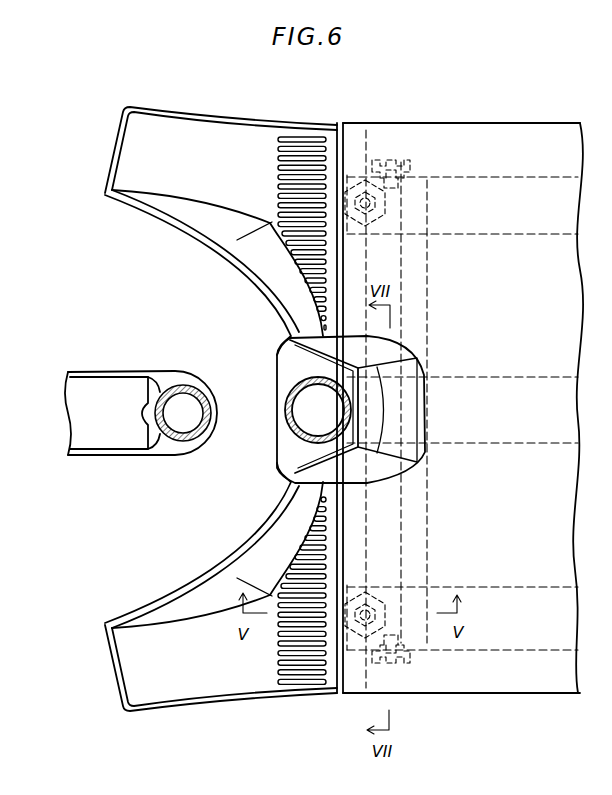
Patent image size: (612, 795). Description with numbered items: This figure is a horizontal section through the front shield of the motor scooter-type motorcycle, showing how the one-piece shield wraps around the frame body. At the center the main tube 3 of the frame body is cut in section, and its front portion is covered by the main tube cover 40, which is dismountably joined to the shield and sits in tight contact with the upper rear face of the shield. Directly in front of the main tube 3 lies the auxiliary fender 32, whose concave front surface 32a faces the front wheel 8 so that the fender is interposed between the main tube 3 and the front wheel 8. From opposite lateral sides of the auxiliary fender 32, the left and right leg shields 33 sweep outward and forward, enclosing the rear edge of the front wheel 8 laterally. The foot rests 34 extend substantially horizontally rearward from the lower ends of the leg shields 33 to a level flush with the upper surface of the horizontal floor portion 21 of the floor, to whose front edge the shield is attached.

The main tube 3 is at (297, 433).
The front wheel 8 is at (85, 385).
The horizontal floor portion 21 is at (485, 687).
The auxiliary fender 32 is at (253, 267).
The concave front surface 32a is at (267, 533).
The leg shields 33 is at (116, 146).
The foot rests 34 is at (300, 667).
The main tube cover 40 is at (402, 347).